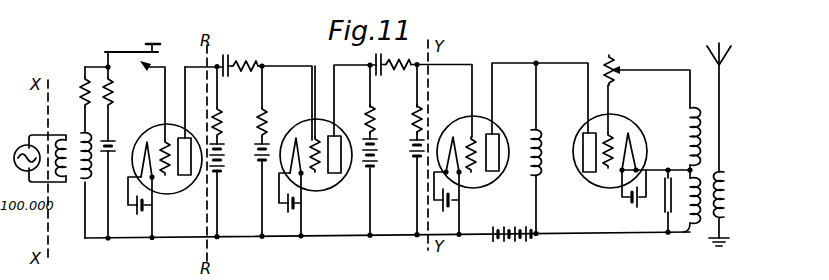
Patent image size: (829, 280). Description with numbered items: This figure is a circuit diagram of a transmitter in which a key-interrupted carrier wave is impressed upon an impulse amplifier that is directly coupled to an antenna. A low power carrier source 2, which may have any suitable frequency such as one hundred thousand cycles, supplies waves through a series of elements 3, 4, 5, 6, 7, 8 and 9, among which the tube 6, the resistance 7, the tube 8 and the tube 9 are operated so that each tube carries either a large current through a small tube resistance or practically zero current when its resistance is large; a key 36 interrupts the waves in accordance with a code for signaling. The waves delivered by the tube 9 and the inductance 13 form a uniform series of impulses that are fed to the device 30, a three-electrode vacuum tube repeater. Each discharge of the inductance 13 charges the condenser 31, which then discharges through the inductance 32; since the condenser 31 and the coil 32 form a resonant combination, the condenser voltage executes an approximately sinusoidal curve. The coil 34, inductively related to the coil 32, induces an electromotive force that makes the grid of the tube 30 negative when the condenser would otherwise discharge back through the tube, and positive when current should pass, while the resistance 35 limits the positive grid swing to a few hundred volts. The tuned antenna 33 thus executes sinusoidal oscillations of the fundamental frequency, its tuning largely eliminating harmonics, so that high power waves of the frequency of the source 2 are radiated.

The carrier source 2 is at (19, 147).
The element 3 is at (80, 93).
The element 4 is at (113, 87).
The element 5 is at (115, 142).
The tube 6 is at (168, 192).
The resistance 7 is at (266, 122).
The tube 8 is at (327, 189).
The tube 9 is at (464, 125).
The inductance 13 is at (544, 152).
The device 30 is at (623, 122).
The condenser 31 is at (661, 212).
The inductance 32 is at (687, 225).
The antenna 33 is at (721, 127).
The coil 34 is at (689, 130).
The resistance 35 is at (609, 55).
The key 36 is at (134, 51).